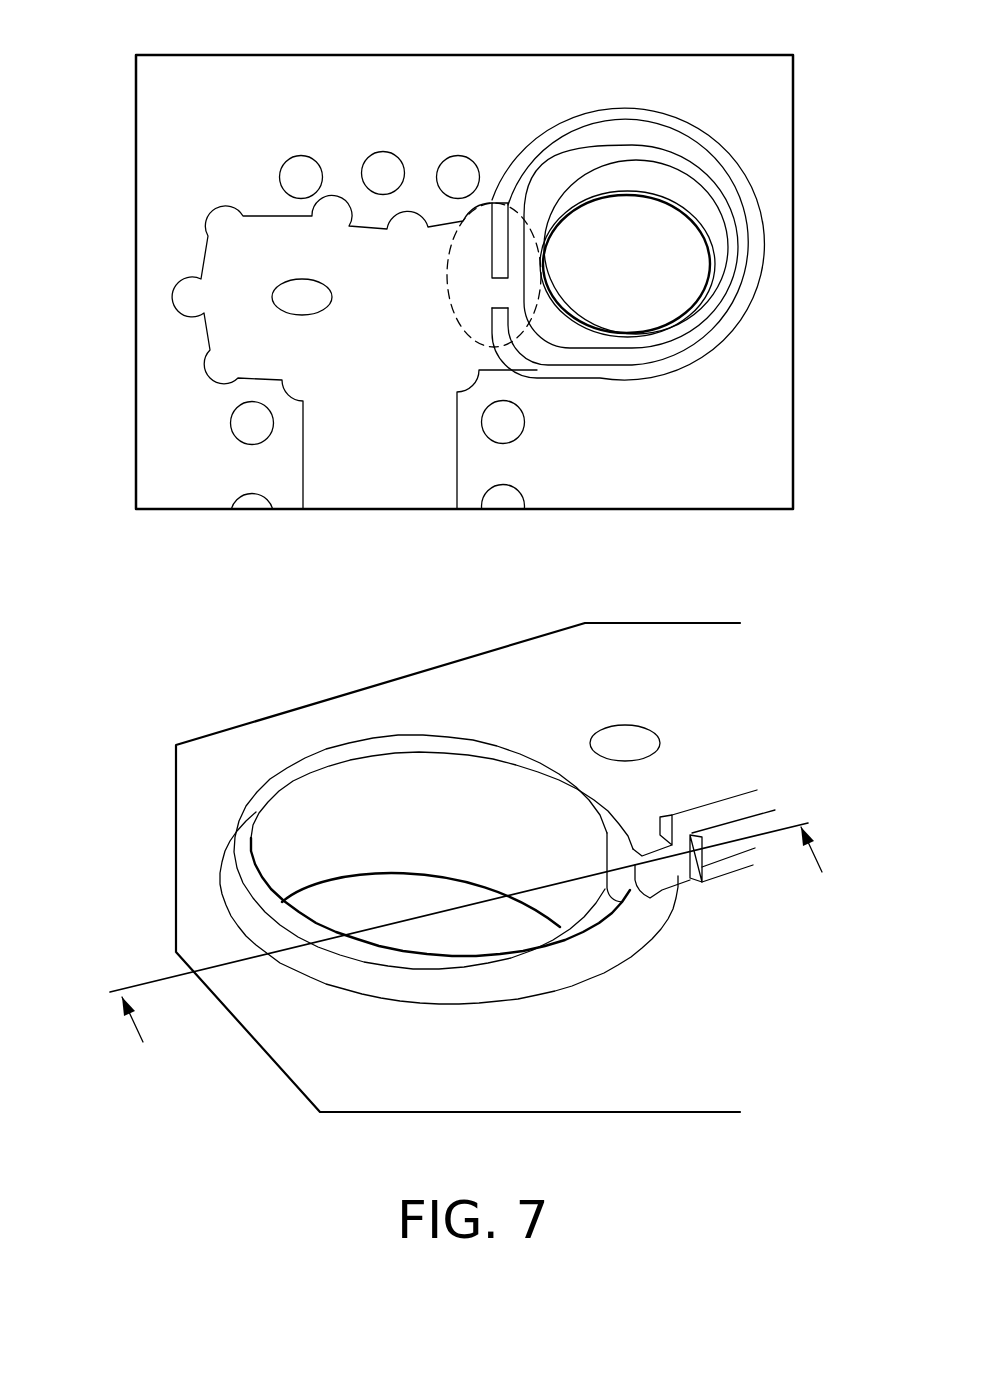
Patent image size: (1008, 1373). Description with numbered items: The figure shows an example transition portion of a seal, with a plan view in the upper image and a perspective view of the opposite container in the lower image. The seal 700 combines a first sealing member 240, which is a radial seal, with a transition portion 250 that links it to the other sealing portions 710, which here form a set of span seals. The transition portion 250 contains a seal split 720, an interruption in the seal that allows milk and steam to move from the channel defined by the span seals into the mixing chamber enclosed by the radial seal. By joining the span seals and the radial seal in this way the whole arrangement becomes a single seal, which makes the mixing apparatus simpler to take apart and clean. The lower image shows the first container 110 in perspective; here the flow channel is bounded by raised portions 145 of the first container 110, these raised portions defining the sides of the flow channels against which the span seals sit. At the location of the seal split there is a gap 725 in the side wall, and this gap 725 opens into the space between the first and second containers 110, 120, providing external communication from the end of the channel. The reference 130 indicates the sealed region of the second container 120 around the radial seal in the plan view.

The first container 110 is at (696, 1092).
The second container 120 is at (557, 80).
The sealing structure 130 is at (758, 117).
The raised portions 145 is at (247, 913).
The first sealing member 240 is at (757, 262).
The transition portion 250 is at (452, 240).
The seal 700 is at (173, 248).
The other sealing portions 710 is at (363, 462).
The seal split 720 is at (500, 293).
The gap 725 is at (645, 837).